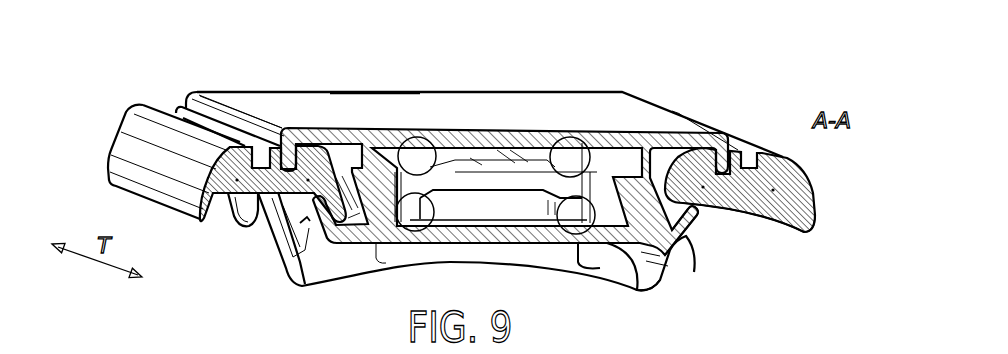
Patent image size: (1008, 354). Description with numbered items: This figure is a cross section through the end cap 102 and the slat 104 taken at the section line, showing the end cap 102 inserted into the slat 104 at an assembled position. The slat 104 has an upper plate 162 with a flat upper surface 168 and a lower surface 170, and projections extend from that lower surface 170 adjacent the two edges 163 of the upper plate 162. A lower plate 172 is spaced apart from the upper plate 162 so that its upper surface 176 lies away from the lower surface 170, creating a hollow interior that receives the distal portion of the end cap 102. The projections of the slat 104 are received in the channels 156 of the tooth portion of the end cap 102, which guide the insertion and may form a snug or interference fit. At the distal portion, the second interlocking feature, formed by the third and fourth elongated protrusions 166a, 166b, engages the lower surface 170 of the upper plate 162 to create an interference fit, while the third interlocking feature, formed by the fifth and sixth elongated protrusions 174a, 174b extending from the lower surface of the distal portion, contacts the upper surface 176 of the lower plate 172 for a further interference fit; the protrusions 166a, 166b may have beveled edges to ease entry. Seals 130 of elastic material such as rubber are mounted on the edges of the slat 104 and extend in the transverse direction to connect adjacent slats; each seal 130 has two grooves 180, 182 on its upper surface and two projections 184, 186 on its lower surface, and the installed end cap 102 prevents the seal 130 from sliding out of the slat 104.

The end cap 102 is at (299, 270).
The slat 104 is at (222, 90).
The seal 130 is at (147, 182).
The channels 156 is at (303, 219).
The upper plate 162 is at (529, 112).
The edges 163 is at (254, 97).
The third elongated protrusion 166a is at (413, 148).
The fourth elongated protrusion 166b is at (572, 148).
The flat upper surface 168 is at (318, 97).
The lower surface 170 is at (473, 146).
The lower plate 172 is at (633, 287).
The fifth elongated protrusion 174a is at (415, 214).
The sixth elongated protrusion 174b is at (578, 216).
The upper surface 176 is at (478, 220).
The groove 180 is at (752, 163).
The groove 182 is at (741, 206).
The projection 184 is at (810, 229).
The projection 186 is at (688, 236).